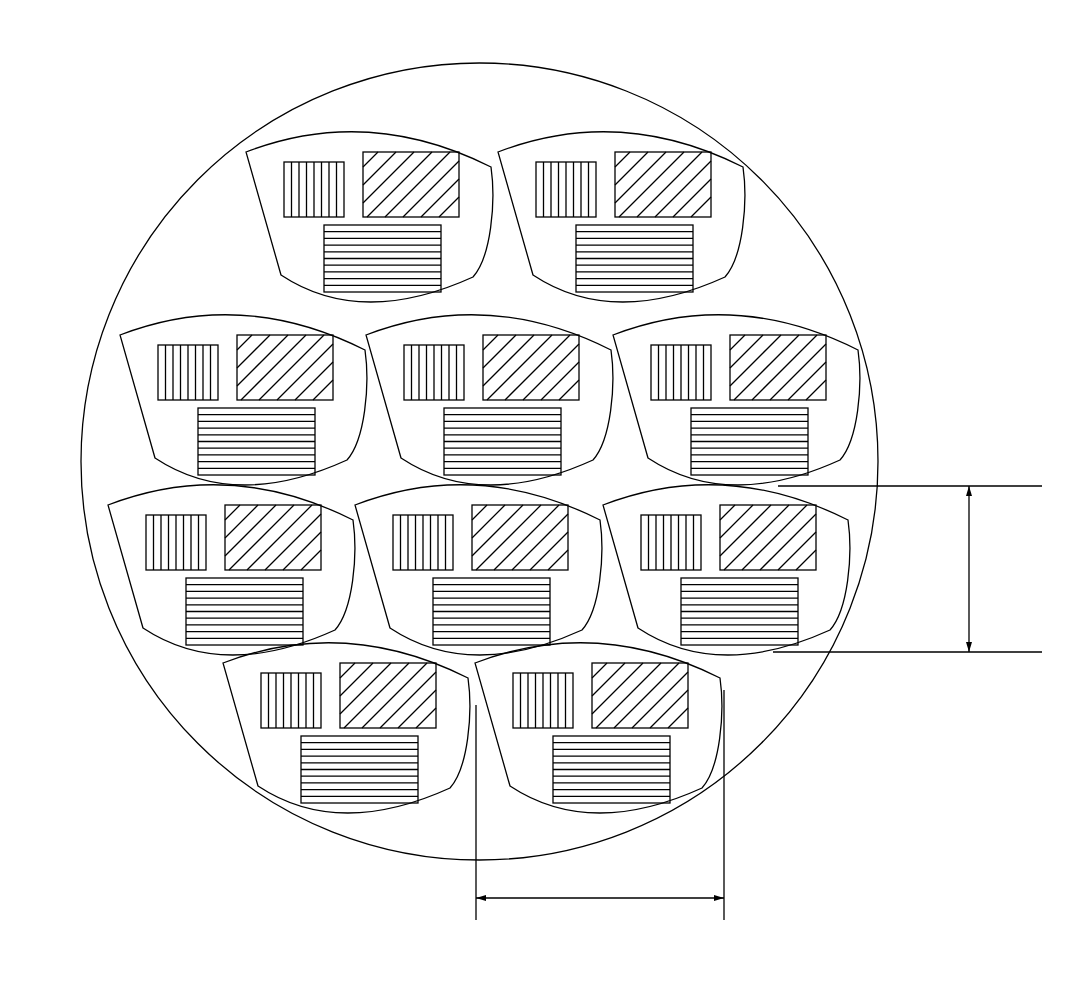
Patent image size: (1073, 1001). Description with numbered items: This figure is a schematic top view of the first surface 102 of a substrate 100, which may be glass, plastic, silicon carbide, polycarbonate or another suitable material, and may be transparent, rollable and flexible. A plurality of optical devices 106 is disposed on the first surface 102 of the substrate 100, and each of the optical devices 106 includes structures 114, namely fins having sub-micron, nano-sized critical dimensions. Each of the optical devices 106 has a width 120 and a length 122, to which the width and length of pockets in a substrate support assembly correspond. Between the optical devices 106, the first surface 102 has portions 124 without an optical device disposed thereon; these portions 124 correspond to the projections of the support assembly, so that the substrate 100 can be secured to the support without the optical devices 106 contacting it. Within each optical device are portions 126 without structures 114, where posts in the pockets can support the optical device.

The substrate 100 is at (185, 90).
The first surface 102 is at (407, 98).
The optical devices 106 is at (155, 418).
The structures 114 is at (262, 355).
The width 120 is at (970, 562).
The length 122 is at (592, 898).
The portions 124 is at (810, 298).
The portions 126 is at (438, 432).